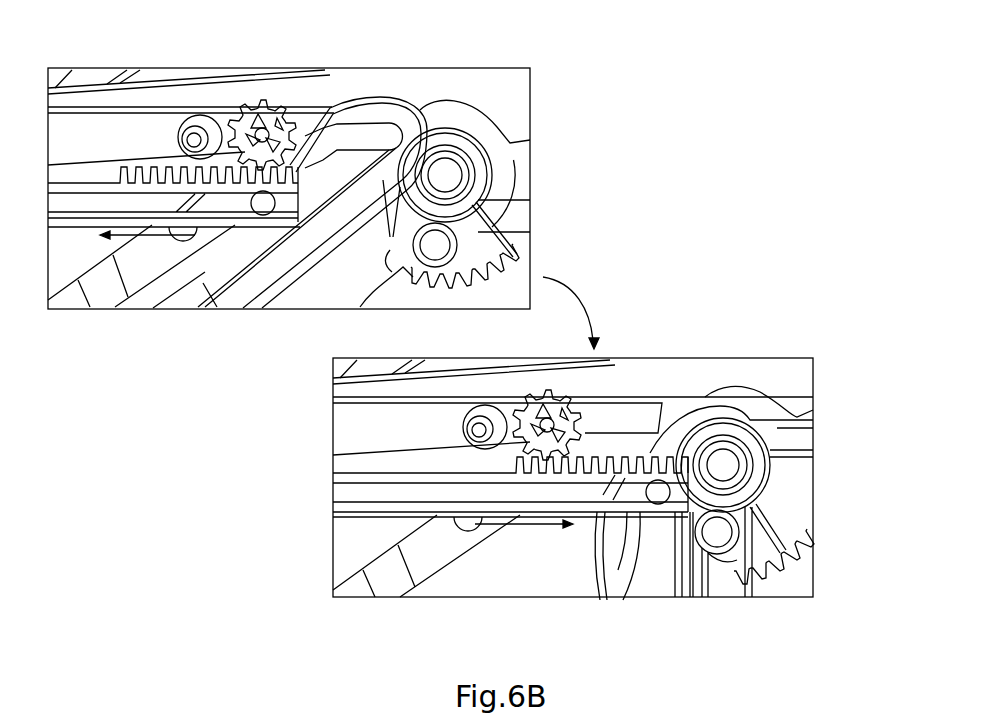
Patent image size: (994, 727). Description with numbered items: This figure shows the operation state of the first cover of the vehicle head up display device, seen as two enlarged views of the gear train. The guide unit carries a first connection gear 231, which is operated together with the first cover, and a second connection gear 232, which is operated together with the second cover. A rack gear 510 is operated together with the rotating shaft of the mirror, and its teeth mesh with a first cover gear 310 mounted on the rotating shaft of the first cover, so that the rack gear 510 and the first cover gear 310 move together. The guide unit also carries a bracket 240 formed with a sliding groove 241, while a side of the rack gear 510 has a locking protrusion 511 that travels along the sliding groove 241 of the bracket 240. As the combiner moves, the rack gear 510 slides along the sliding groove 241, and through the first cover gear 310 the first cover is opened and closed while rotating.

The rack gear 510 is at (137, 166).
The locking protrusion 511 is at (262, 212).
The first cover gear 310 is at (260, 105).
The first connection gear 231 is at (446, 166).
The second connection gear 232 is at (505, 188).
The bracket 240 is at (333, 248).
The sliding groove 241 is at (378, 132).